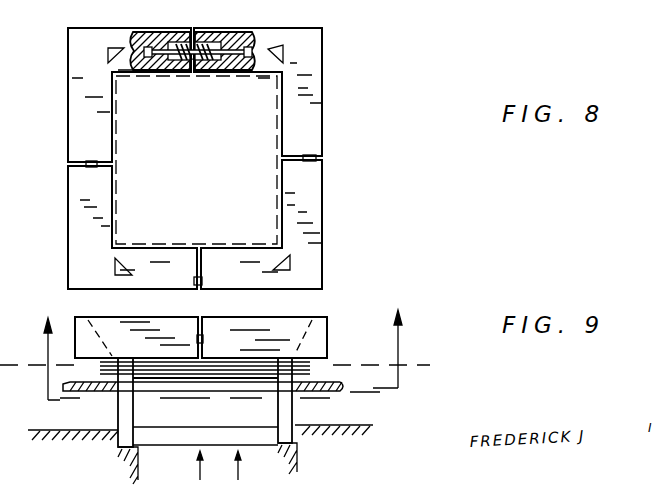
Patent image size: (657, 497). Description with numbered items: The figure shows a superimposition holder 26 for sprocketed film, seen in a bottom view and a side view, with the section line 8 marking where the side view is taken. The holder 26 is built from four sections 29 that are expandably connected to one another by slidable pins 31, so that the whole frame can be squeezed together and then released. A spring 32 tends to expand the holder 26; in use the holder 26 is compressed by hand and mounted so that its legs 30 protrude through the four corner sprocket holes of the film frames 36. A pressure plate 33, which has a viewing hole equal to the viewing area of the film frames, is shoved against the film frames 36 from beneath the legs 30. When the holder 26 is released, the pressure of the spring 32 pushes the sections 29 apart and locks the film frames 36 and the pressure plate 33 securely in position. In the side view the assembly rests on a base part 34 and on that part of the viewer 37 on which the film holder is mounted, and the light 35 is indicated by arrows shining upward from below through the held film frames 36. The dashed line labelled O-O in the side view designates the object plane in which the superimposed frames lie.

In FIG. 9, the section line 8- 8 is at (215, 352).
In FIG. 8, the holder 26 is at (338, 190).
In FIG. 8, the sections 29 is at (68, 235).
In FIG. 9, the sections 29 is at (88, 318).
In FIG. 8, the legs 30 is at (107, 51).
In FIG. 9, the legs 30 is at (118, 408).
In FIG. 8, the slidable pins 31 is at (247, 32).
In FIG. 9, the slidable pins 31 is at (203, 337).
In FIG. 8, the spring 32 is at (225, 34).
In FIG. 9, the pressure plate 33 is at (189, 385).
In FIG. 9, the base plate 34 is at (63, 386).
In FIG. 9, the light 35 is at (219, 465).
In FIG. 9, the film frames 36 is at (243, 375).
In FIG. 9, the part of the viewer 37 is at (42, 430).